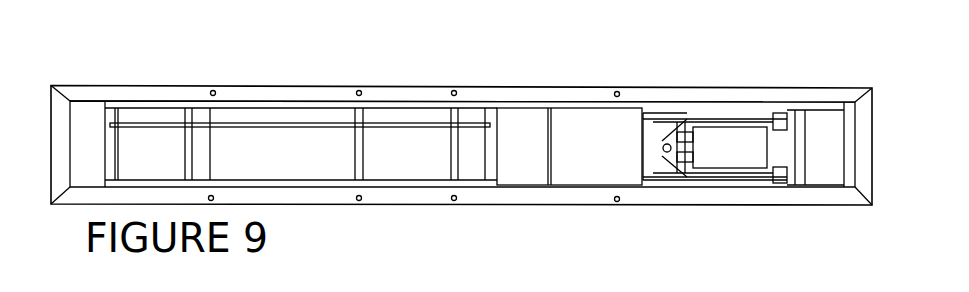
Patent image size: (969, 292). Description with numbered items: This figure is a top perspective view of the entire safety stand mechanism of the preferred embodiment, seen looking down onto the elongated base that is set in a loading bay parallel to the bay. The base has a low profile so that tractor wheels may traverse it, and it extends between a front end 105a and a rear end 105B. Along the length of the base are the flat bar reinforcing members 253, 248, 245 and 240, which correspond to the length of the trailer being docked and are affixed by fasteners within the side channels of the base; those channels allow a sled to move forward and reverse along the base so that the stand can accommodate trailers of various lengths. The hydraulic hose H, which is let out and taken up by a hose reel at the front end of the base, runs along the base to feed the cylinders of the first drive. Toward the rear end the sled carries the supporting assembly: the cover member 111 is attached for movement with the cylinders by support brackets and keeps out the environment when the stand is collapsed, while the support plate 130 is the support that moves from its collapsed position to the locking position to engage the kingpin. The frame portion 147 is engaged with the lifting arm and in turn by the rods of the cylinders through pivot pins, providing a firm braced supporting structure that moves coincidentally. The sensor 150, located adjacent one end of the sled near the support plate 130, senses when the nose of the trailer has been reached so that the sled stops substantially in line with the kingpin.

The front end 105a is at (60, 108).
The rear end 105B is at (863, 188).
The hydraulic hose H is at (157, 124).
The reinforcing member 240 is at (212, 115).
The reinforcing member 245 is at (355, 115).
The reinforcing member 248 is at (453, 115).
The cover member 111 is at (558, 128).
The reinforcing member 253 is at (590, 103).
The support plate 130 is at (653, 125).
The frame portion 147 is at (720, 138).
The sensor 150 is at (668, 155).